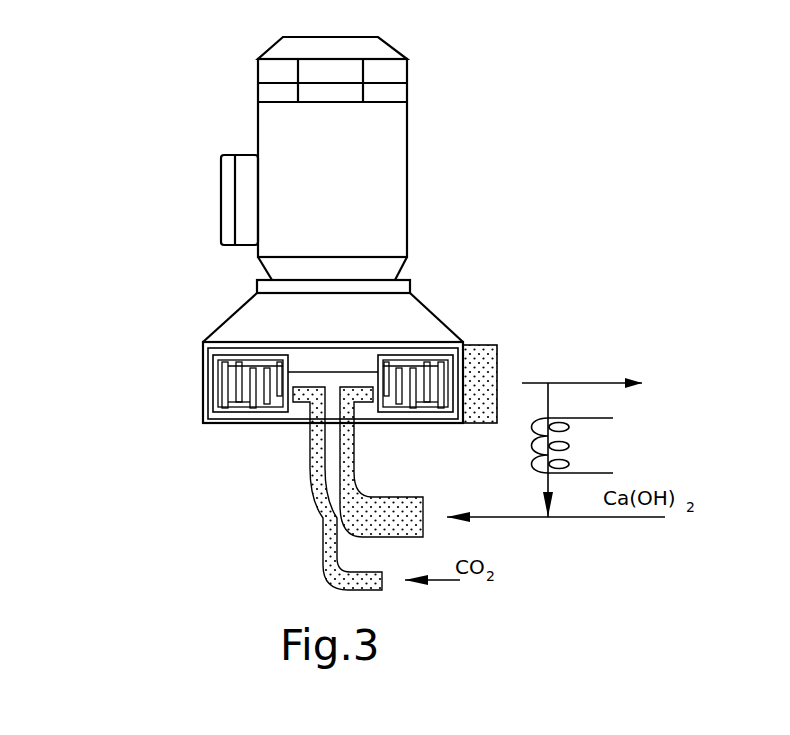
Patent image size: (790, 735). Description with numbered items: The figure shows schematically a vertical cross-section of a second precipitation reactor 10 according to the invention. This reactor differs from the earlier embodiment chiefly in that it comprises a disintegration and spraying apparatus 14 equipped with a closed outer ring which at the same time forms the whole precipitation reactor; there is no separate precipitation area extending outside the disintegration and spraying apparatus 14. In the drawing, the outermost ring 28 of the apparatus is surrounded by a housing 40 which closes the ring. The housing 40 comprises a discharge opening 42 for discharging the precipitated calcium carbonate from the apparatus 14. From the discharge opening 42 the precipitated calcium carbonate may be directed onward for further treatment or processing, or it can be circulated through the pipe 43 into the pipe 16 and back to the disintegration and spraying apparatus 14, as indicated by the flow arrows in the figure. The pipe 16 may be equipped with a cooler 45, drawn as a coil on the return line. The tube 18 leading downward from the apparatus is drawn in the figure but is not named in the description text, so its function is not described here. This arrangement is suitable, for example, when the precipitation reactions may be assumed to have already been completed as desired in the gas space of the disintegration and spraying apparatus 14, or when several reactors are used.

The precipitation reactor 10 is at (484, 170).
The disintegration and spraying apparatus 14 is at (183, 362).
The pipe 16 is at (368, 510).
The outlet tube 18 is at (335, 532).
The outermost ring 28 is at (213, 395).
The housing 40 is at (208, 402).
The discharge opening 42 is at (483, 368).
The pipe 43 is at (548, 405).
The cooler 45 is at (580, 445).